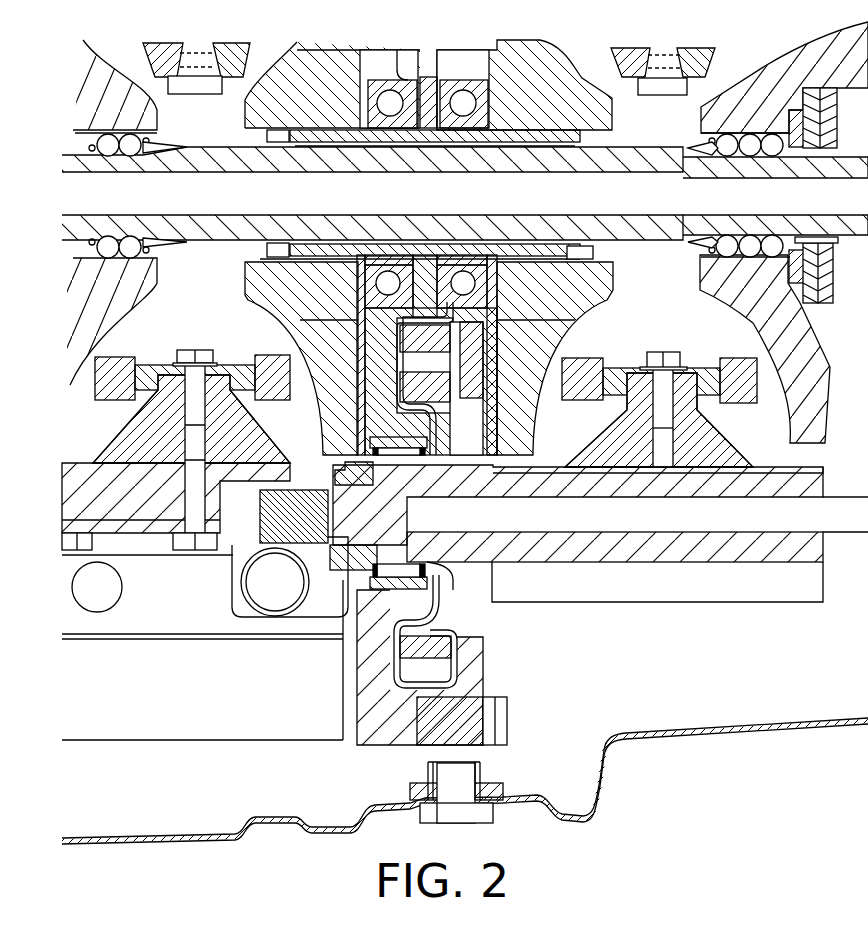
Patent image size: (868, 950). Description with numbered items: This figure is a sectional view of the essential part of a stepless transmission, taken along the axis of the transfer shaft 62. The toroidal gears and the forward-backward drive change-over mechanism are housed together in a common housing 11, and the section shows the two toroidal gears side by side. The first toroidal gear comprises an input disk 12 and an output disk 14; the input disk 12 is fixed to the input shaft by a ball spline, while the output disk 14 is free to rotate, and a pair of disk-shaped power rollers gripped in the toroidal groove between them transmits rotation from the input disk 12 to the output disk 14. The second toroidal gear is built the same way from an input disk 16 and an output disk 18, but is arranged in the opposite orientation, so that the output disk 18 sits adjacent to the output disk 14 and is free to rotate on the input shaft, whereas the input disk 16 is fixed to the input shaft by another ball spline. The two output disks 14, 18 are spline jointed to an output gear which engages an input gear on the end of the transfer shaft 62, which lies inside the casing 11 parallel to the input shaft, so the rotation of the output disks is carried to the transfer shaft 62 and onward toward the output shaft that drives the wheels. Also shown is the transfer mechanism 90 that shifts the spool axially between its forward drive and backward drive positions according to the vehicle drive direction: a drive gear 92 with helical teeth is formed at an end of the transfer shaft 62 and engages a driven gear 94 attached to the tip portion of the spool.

The housing 11 is at (666, 737).
The input disk 12 is at (103, 62).
The output disk 14 is at (297, 55).
The input disk 16 is at (761, 80).
The output disk 18 is at (578, 72).
The transfer shaft 62 is at (621, 562).
The transfer mechanism 90 is at (248, 493).
The drive gear 92 is at (258, 546).
The driven gear 94 is at (262, 616).